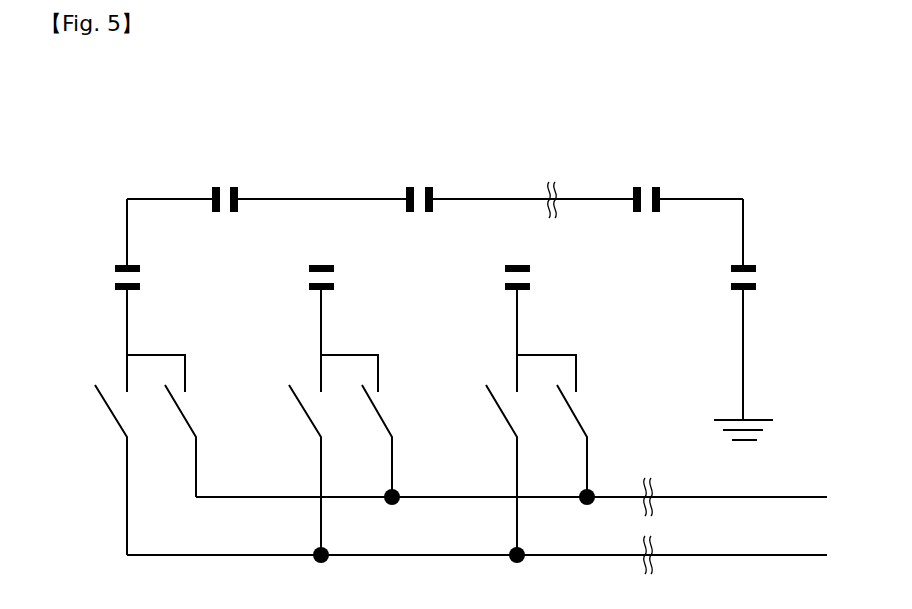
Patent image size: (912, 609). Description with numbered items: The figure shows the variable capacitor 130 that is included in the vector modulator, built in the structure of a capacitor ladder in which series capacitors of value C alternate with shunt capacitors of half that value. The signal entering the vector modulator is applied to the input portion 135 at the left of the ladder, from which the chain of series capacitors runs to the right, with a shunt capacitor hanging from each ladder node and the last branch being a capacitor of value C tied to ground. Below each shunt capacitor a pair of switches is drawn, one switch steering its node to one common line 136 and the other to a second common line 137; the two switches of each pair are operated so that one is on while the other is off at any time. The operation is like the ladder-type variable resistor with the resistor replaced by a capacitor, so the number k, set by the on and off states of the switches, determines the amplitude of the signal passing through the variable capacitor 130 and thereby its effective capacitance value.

The variable capacitor 130 is at (750, 167).
The input portion 135 is at (127, 199).
The first control line 136 is at (530, 497).
The second control line 137 is at (496, 555).